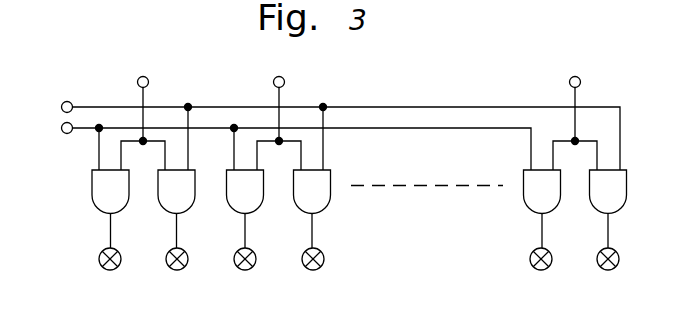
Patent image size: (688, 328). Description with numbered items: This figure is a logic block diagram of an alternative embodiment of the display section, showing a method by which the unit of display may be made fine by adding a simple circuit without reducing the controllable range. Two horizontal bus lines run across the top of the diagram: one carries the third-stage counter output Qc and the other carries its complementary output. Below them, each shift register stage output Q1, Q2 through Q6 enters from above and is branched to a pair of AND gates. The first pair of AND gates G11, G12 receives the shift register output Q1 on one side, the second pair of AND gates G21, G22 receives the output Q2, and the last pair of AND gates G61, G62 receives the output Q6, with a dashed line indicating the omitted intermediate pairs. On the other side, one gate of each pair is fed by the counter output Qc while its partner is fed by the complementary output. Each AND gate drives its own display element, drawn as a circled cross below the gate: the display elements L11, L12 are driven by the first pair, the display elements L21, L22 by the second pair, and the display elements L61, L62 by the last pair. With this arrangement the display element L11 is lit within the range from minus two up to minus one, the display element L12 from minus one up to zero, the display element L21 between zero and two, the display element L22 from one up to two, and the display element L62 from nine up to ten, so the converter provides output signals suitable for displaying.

The third stage output of counter Qc is at (324, 132).
The shift register stage output Q1 is at (142, 117).
The shift register stage output Q2 is at (278, 117).
The shift register stage output Q6 is at (570, 118).
The AND gate G11 is at (95, 213).
The AND gate G12 is at (170, 214).
The AND gate G21 is at (231, 213).
The AND gate G22 is at (307, 214).
The AND gate G61 is at (531, 214).
The AND gate G62 is at (598, 213).
The display element L11 is at (104, 260).
The display element L12 is at (171, 260).
The display element L21 is at (242, 260).
The display element L22 is at (310, 260).
The display element L61 is at (535, 260).
The display element L62 is at (602, 260).